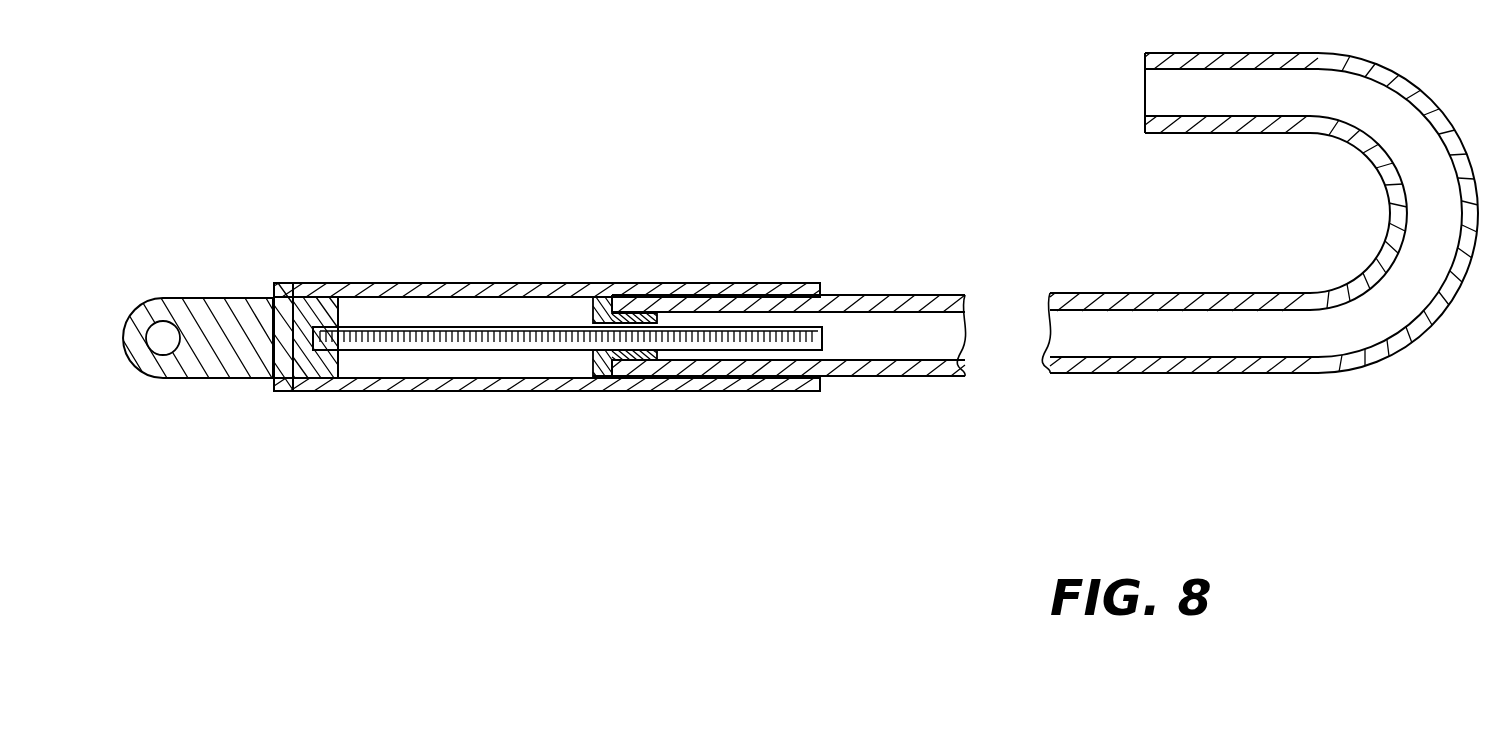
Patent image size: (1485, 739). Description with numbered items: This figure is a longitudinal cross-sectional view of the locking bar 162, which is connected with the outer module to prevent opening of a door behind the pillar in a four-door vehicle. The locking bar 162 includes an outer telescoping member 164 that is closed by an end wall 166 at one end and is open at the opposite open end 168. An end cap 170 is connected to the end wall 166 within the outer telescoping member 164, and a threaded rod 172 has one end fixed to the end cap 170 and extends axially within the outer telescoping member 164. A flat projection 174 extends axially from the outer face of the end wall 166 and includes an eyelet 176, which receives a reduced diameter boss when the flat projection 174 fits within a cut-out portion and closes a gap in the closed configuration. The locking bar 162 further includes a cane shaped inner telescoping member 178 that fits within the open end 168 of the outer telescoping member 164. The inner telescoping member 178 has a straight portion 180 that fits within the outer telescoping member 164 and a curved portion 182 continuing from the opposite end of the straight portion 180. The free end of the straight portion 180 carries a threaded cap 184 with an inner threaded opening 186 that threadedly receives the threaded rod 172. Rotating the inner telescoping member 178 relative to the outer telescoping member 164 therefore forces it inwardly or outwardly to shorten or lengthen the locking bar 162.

The locking bar 162 is at (694, 250).
The outer telescoping member 164 is at (520, 283).
The end wall 166 is at (276, 305).
The open end 168 is at (820, 290).
The end cap 170 is at (323, 368).
The threaded rod 172 is at (440, 330).
The flat projection 174 is at (205, 378).
The eyelet 176 is at (140, 298).
The inner telescoping member 178 is at (1080, 378).
The straight portion 180 is at (905, 370).
The curved portion 182 is at (1362, 150).
The threaded cap 184 is at (598, 360).
The inner threaded opening 186 is at (597, 318).